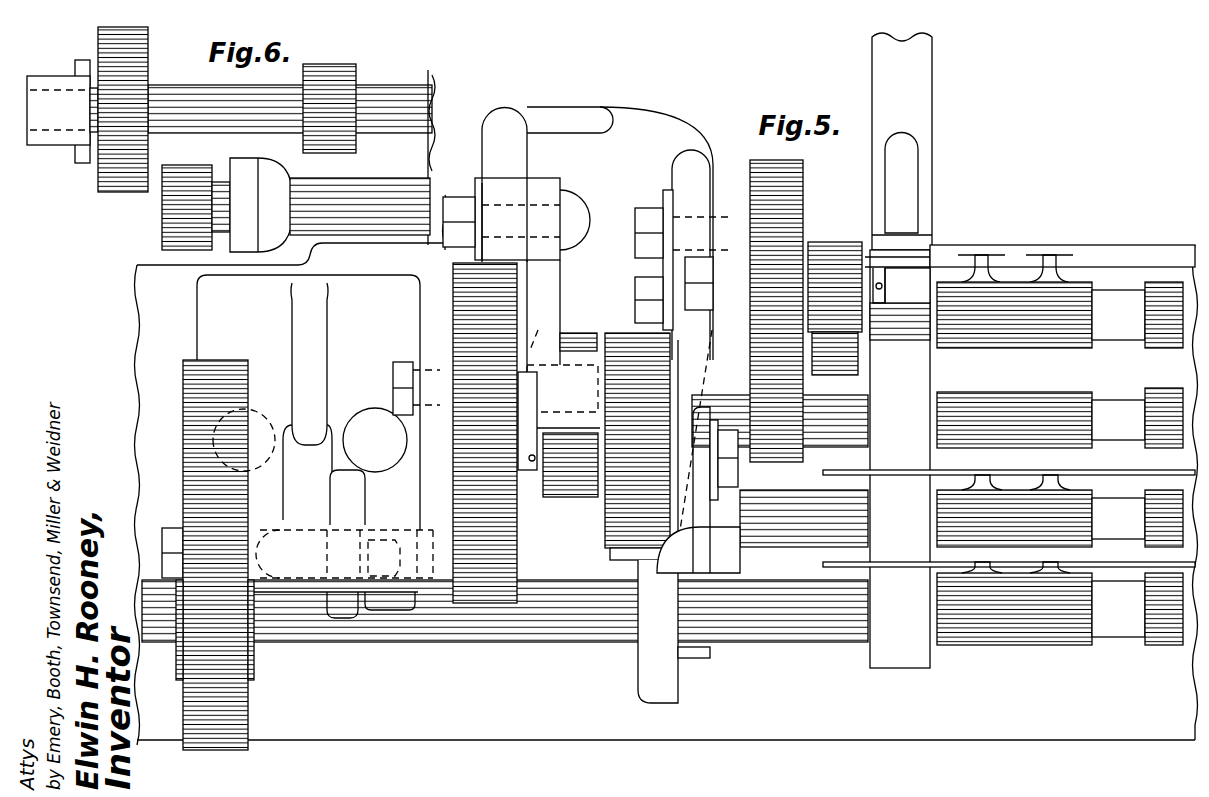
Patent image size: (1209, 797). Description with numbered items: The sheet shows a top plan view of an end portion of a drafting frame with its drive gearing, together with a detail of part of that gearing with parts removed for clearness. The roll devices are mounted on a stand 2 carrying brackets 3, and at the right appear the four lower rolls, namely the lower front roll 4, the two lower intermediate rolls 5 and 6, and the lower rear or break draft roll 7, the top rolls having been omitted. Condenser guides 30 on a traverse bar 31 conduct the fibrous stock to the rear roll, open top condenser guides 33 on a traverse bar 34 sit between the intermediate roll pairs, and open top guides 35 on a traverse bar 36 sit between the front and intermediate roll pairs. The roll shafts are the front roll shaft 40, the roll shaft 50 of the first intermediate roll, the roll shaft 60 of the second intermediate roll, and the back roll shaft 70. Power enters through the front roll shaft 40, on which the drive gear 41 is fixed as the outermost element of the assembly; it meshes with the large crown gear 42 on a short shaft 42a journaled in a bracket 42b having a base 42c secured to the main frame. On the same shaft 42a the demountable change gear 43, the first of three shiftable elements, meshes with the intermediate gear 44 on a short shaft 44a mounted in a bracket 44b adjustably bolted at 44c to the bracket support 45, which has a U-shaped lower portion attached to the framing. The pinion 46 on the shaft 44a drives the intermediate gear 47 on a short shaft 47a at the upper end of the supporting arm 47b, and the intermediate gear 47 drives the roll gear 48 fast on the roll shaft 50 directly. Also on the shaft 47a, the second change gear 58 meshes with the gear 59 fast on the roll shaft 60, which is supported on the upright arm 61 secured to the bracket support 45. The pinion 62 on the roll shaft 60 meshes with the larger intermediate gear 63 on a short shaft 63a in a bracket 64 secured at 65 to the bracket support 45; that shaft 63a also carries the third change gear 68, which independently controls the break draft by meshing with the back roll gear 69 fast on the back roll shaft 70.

In FIG. 5, the stand 2 is at (920, 133).
In FIG. 5, the bracket 3 is at (920, 245).
In FIG. 5, the lower front roll 4 is at (1016, 632).
In FIG. 5, the lower intermediate roll 5 is at (1012, 488).
In FIG. 5, the lower intermediate roll 6 is at (1050, 398).
In FIG. 5, the lower rear roll 7 is at (1062, 336).
In FIG. 5, the condenser guide 30 is at (985, 262).
In FIG. 5, the traverse bar 31 is at (1145, 258).
In FIG. 5, the condenser guide 33 is at (972, 478).
In FIG. 5, the traverse bar 34 is at (1122, 478).
In FIG. 5, the guide 35 is at (972, 566).
In FIG. 5, the traverse bar 36 is at (1126, 570).
In FIG. 5, the front roll shaft 40 is at (168, 632).
In FIG. 5, the drive gear 41 is at (178, 678).
In FIG. 5, the crown gear 42 is at (226, 372).
In FIG. 5, the short shaft 42a is at (304, 520).
In FIG. 5, the bracket 42b is at (352, 497).
In FIG. 5, the base 42c is at (368, 284).
In FIG. 5, the change gear 43 is at (486, 632).
In FIG. 5, the intermediate gear 44 is at (470, 290).
In FIG. 5, the short shaft 44a is at (408, 358).
In FIG. 5, the bracket 44b is at (548, 282).
In FIG. 5, the bolting 44c is at (540, 202).
In FIG. 5, the bracket support 45 is at (645, 120).
In FIG. 5, the pinion 46 is at (624, 340).
In FIG. 5, the intermediate gear 47 is at (618, 537).
In FIG. 5, the short shaft 47a is at (528, 474).
In FIG. 5, the supporting arm 47b is at (700, 650).
In FIG. 6, the roll gear 48 is at (184, 178).
In FIG. 5, the roll gear 48 is at (700, 562).
In FIG. 6, the roll shaft 50 is at (378, 186).
In FIG. 5, the roll shaft 50 is at (868, 560).
In FIG. 5, the change gear 58 is at (580, 494).
In FIG. 6, the gear 59 is at (128, 185).
In FIG. 5, the gear 59 is at (575, 336).
In FIG. 6, the roll shaft 60 is at (178, 98).
In FIG. 5, the roll shaft 60 is at (712, 405).
In FIG. 6, the upright arm 61 is at (82, 150).
In FIG. 5, the upright arm 61 is at (544, 327).
In FIG. 6, the pinion 62 is at (322, 72).
In FIG. 5, the pinion 62 is at (784, 450).
In FIG. 5, the intermediate gear 63 is at (796, 208).
In FIG. 5, the short shaft 63a is at (880, 284).
In FIG. 5, the bracket 64 is at (712, 206).
In FIG. 5, the securing means 65 is at (656, 218).
In FIG. 5, the change gear 68 is at (832, 244).
In FIG. 5, the back roll gear 69 is at (822, 358).
In FIG. 5, the back roll shaft 70 is at (918, 326).